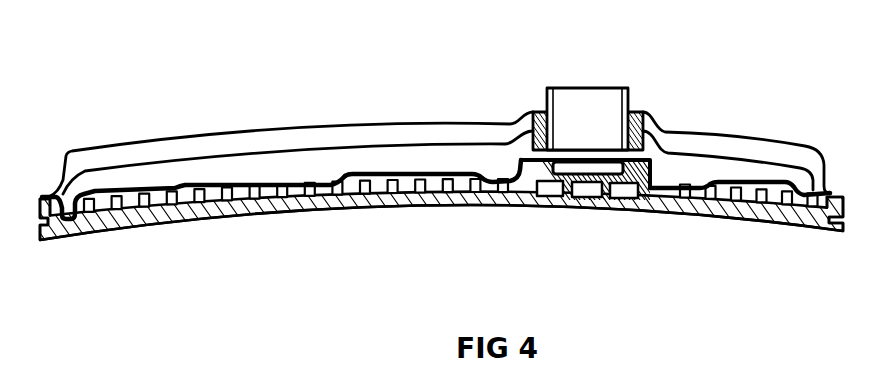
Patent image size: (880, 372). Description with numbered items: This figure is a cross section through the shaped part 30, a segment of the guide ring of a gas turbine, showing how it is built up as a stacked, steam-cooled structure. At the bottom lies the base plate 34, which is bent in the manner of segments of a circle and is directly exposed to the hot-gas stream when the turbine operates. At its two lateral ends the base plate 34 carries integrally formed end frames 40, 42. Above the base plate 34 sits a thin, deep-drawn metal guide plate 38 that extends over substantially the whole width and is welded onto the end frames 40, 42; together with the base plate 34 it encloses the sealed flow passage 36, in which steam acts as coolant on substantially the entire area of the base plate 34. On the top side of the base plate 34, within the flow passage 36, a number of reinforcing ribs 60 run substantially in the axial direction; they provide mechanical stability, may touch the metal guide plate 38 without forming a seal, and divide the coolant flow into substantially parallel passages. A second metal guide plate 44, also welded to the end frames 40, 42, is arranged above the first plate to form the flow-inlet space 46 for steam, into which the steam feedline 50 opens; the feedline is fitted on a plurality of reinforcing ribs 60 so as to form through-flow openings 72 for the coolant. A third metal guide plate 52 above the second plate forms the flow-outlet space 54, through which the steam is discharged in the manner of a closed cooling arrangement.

The shaped part 30 is at (836, 195).
The base plate 34 is at (124, 229).
The flow passage 36 is at (394, 178).
The metal guide plate 38 is at (293, 212).
The end frame 40 is at (42, 200).
The end frame 42 is at (832, 237).
The second metal guide plate 44 is at (426, 145).
The flow-inlet space 46 is at (713, 178).
The steam feedline 50 is at (580, 120).
The third metal guide plate 52 is at (220, 130).
The flow-outlet space 54 is at (343, 139).
The reinforcing ribs 60 is at (197, 207).
The through-flow openings 72 is at (626, 197).